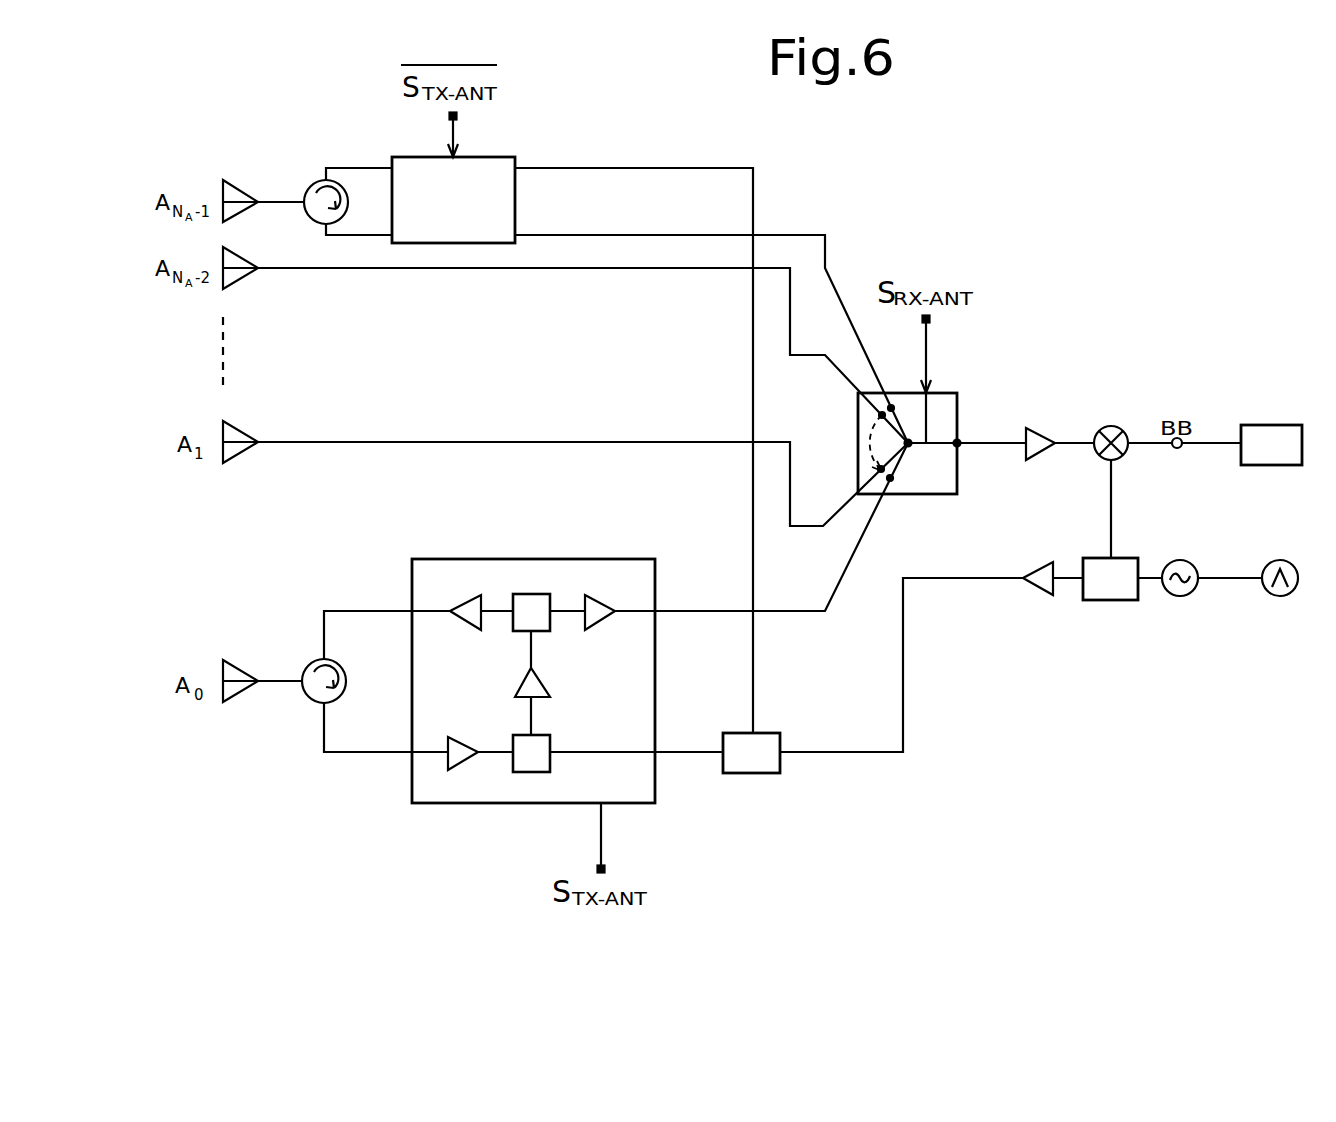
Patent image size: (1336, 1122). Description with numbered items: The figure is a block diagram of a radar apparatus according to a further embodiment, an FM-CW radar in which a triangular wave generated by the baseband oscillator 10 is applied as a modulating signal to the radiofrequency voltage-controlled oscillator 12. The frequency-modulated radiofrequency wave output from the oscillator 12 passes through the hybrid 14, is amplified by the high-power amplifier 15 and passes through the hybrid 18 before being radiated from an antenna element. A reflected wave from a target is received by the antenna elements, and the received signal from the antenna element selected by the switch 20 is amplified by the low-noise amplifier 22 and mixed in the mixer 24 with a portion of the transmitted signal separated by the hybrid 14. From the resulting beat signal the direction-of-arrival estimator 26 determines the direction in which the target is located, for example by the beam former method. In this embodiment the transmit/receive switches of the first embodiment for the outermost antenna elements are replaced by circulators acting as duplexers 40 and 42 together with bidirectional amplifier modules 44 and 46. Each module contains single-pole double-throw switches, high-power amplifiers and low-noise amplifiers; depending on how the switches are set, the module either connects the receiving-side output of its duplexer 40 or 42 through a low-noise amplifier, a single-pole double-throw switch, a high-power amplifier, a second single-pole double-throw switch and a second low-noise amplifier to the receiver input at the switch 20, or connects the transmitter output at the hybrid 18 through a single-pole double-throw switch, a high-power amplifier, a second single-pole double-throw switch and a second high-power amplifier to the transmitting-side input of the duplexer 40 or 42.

The baseband oscillator 10 is at (1280, 596).
The radiofrequency voltage-controlled oscillator 12 is at (1180, 596).
The hybrid 14 is at (1110, 600).
The high-power amplifier 15 is at (1040, 600).
The hybrid 18 is at (758, 775).
The switch 20 is at (943, 393).
The low-noise amplifier 22 is at (1045, 452).
The mixer 24 is at (1132, 450).
The direction-of-arrival estimator 26 is at (1262, 425).
The circulator 40 is at (307, 183).
The circulator 42 is at (307, 700).
The bidirectional amplifier module 44 is at (483, 157).
The bidirectional amplifier module 46 is at (446, 805).